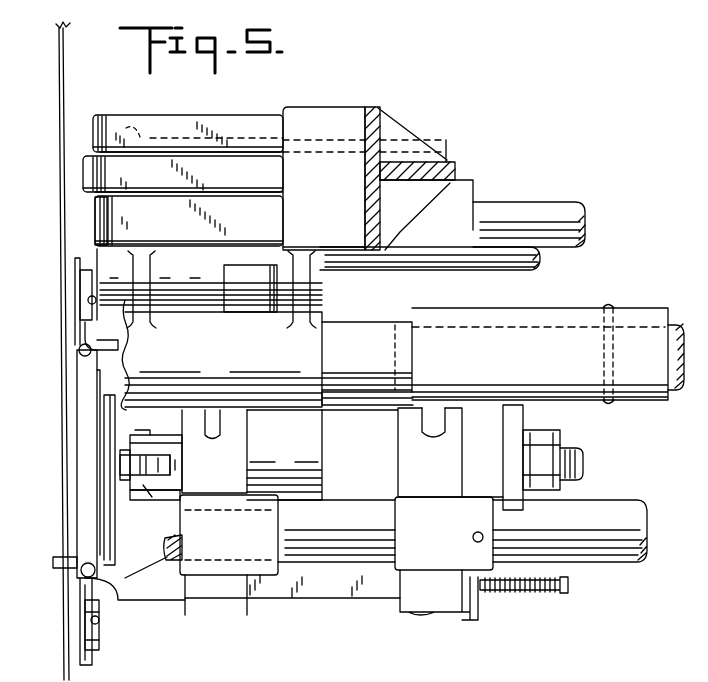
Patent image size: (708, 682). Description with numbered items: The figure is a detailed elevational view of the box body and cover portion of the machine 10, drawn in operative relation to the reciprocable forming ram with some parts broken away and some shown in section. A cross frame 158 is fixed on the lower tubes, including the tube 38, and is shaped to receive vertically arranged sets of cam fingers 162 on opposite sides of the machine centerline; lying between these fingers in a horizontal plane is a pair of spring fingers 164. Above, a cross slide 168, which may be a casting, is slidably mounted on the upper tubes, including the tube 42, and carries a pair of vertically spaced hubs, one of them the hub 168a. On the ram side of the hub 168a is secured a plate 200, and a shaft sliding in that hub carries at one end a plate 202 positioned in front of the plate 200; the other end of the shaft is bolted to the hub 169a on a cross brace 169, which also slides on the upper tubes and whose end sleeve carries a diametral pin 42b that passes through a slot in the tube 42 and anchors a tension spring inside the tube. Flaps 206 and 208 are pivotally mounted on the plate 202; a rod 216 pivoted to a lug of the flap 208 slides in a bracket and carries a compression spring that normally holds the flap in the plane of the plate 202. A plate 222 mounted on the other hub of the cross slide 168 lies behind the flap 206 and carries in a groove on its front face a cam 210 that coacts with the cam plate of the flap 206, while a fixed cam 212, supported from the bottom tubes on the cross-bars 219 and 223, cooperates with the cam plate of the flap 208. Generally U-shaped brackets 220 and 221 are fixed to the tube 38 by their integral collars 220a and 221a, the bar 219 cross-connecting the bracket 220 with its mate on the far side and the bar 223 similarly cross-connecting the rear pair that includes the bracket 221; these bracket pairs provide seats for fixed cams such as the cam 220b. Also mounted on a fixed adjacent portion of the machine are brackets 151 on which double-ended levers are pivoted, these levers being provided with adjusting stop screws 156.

The support rod 10 is at (64, 67).
The cam fingers 162 is at (97, 218).
The spring fingers 164 is at (153, 137).
The plate 222 is at (95, 240).
The cross frame 158 is at (380, 118).
The tube 38 is at (357, 522).
The cross slide 168 is at (223, 359).
The cam 210 is at (95, 330).
The tube 42 is at (367, 363).
The diametral pin 42b is at (604, 362).
The cross brace 169 is at (636, 400).
The hub 169a is at (487, 437).
The flap 206 is at (75, 290).
The plate 202 is at (80, 503).
The plate 200 is at (115, 548).
The flap 208 is at (77, 657).
The cam 212 is at (107, 601).
The adjusting stop screws 156 is at (168, 462).
The brackets 151 is at (160, 540).
The bracket 220 is at (237, 445).
The hub 168a is at (284, 455).
The bracket 221 is at (410, 442).
The integral collar 221a is at (452, 476).
The integral collar 220a is at (250, 552).
The bar 223 is at (225, 603).
The fixed cam 220b is at (312, 593).
The bar 219 is at (420, 606).
The rod 216 is at (522, 590).